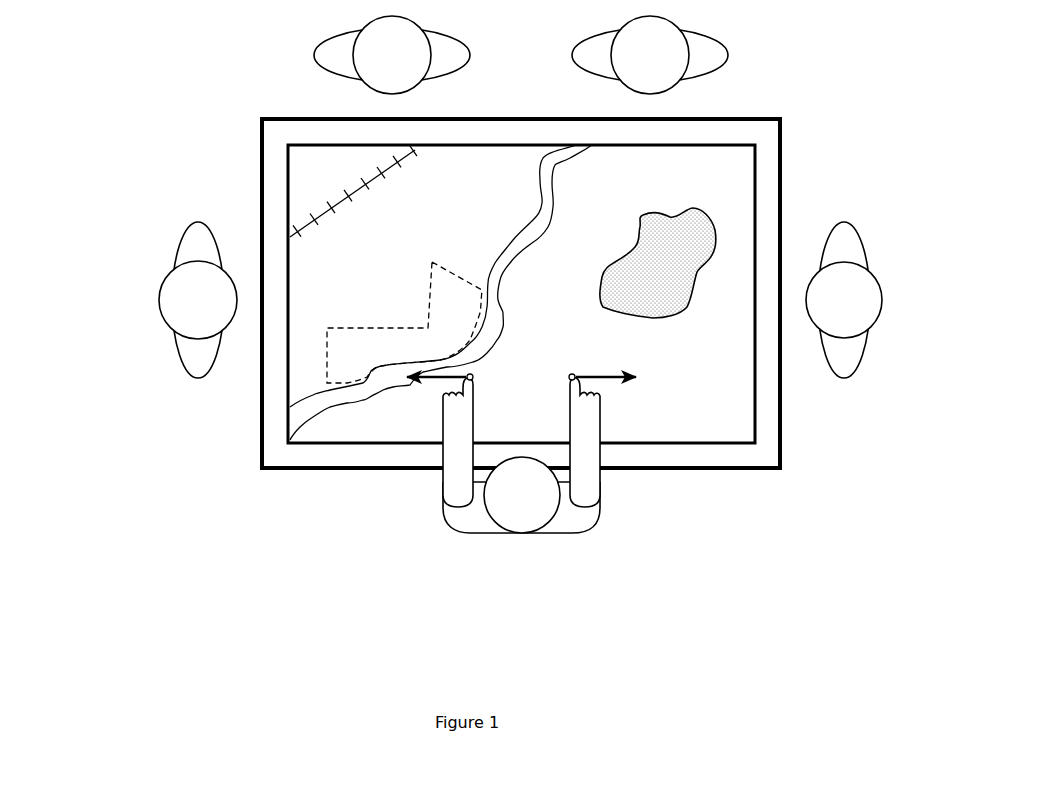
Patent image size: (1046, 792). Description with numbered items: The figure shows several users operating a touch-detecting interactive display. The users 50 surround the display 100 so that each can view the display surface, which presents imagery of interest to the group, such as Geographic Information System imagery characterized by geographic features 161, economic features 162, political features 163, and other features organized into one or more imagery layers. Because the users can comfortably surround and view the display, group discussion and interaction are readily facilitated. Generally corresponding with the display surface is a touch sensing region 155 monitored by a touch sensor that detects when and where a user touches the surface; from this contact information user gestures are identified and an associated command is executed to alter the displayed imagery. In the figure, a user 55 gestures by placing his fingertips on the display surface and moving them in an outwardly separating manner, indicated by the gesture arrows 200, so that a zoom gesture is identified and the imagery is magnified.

The users 50 is at (155, 300).
The user 55 is at (521, 548).
The display 100 is at (256, 162).
The touch sensing region 155 is at (703, 178).
The geographic features 161 is at (667, 319).
The economic features 162 is at (353, 197).
The political features 163 is at (407, 323).
The multi-touch spreading gesture 200 is at (600, 370).